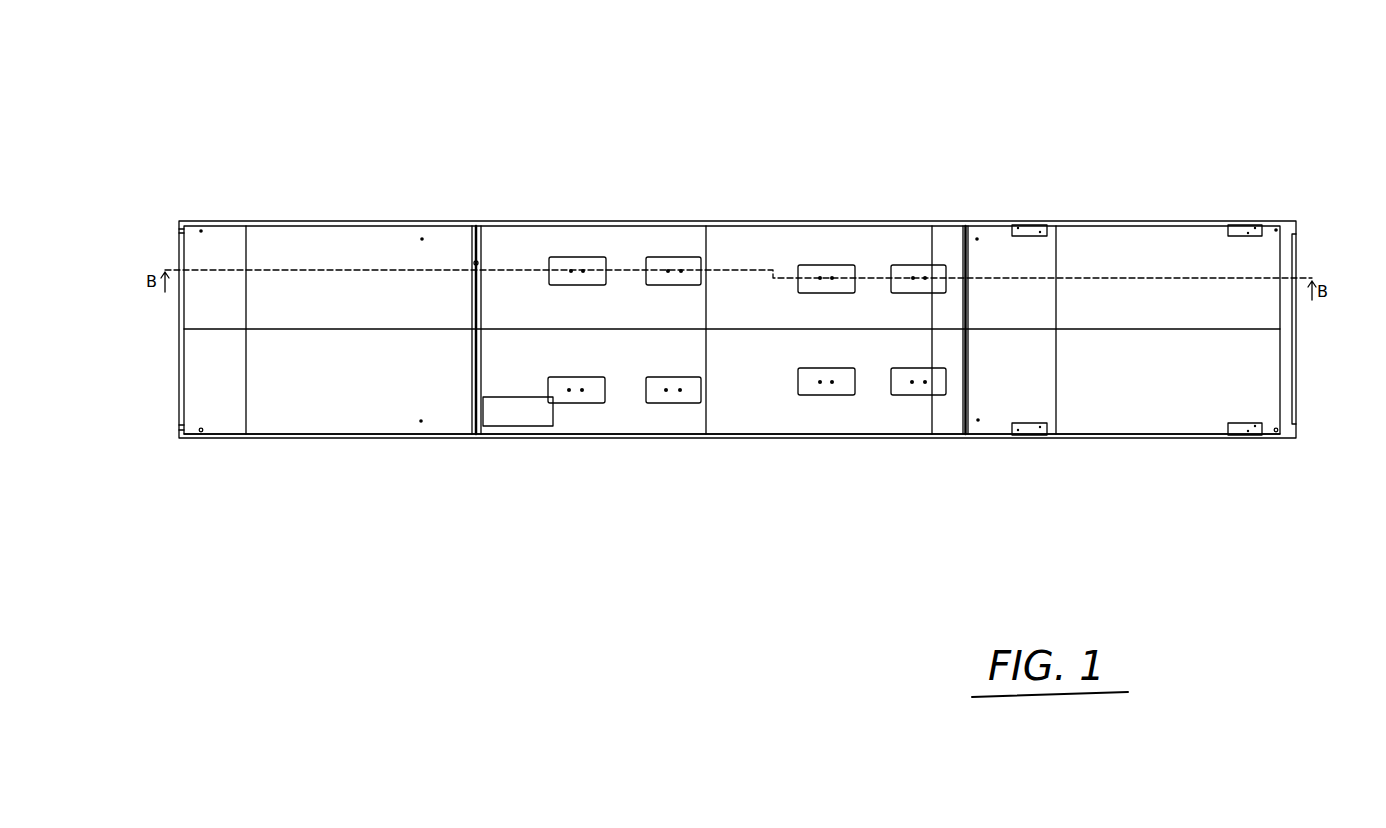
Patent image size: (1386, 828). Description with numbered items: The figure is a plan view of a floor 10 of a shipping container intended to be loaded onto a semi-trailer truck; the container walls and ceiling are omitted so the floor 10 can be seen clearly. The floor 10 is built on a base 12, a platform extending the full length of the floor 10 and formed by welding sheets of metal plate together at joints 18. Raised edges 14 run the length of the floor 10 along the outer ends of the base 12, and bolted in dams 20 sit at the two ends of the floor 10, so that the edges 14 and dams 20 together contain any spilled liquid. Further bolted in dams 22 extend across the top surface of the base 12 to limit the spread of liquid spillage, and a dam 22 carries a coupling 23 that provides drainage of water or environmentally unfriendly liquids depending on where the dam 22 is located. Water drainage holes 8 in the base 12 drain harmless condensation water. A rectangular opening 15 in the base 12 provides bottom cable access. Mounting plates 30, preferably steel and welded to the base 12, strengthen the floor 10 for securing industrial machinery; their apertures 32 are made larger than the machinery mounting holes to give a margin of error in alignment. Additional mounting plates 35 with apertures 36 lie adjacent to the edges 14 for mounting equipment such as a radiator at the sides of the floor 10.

The floor 10 is at (693, 78).
The water drainage holes 8 is at (204, 234).
The base 12 is at (347, 243).
The raised edges 14 is at (1113, 437).
The rectangular opening 15 is at (516, 408).
The joints 18 is at (283, 328).
The bolted in dams 20 is at (182, 372).
The bolted in dams 22 is at (477, 238).
The coupling 23 is at (486, 263).
The mounting plates 30 is at (588, 260).
The apertures 32 is at (681, 398).
The additional mounting plates 35 is at (1037, 230).
The apertures 36 is at (1016, 218).